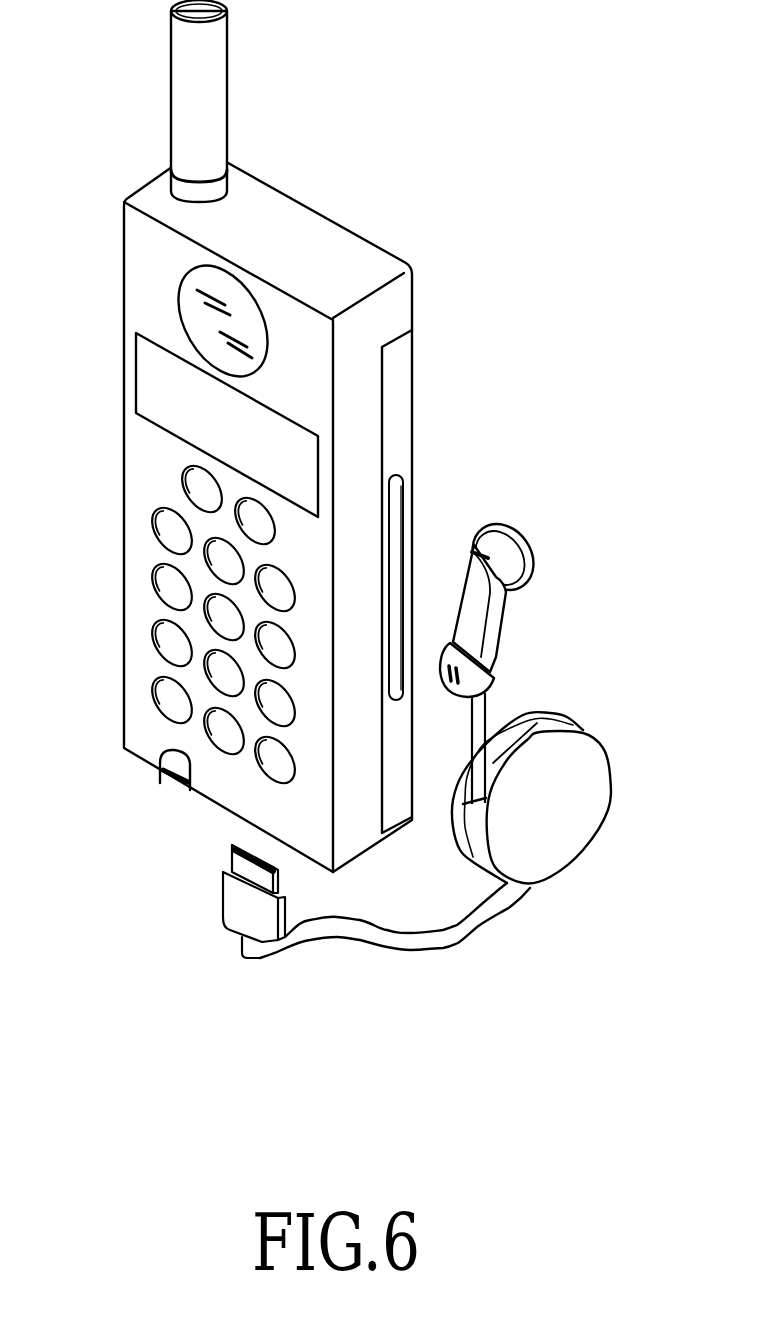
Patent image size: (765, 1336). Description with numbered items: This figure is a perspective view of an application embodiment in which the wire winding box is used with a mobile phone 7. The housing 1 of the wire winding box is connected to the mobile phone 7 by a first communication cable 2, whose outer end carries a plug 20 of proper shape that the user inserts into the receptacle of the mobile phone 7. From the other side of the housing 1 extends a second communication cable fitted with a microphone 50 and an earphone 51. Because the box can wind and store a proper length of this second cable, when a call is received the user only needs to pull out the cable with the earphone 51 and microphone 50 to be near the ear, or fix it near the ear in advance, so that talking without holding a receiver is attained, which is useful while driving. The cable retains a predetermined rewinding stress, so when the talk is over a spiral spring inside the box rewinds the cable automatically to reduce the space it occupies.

The mobile phone 7 is at (145, 461).
The plug 20 is at (238, 903).
The first communication cable 2 is at (385, 937).
The housing 1 is at (582, 823).
The microphone 50 is at (477, 730).
The earphone 51 is at (527, 560).